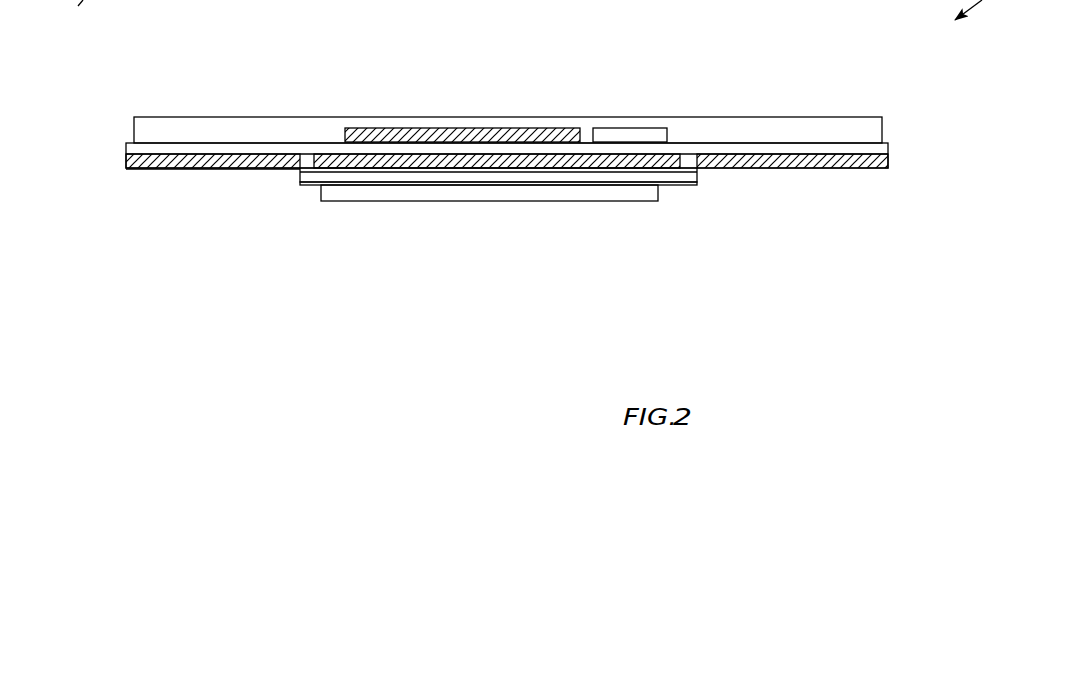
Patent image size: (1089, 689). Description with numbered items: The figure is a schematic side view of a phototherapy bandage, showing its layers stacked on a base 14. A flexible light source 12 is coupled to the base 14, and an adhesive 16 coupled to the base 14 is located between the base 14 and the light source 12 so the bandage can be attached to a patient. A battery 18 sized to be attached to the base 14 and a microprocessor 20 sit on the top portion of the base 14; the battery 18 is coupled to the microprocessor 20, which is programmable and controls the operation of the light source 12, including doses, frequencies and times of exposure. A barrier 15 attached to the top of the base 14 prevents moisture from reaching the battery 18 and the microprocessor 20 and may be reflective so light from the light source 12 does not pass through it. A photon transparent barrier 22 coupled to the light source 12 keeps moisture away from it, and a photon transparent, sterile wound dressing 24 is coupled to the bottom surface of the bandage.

The light source 12 is at (498, 252).
The base 14 is at (580, 243).
The barrier 15 is at (508, 89).
The adhesive 16 is at (213, 223).
The battery 18 is at (381, 102).
The microprocessor 20 is at (766, 99).
The barrier 22 is at (566, 261).
The wound dressing 24 is at (409, 266).